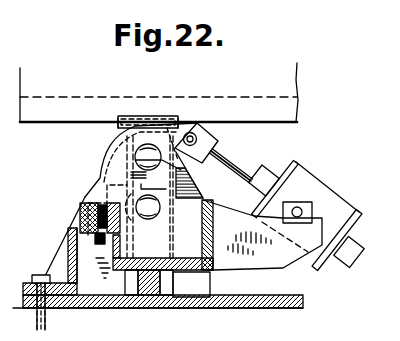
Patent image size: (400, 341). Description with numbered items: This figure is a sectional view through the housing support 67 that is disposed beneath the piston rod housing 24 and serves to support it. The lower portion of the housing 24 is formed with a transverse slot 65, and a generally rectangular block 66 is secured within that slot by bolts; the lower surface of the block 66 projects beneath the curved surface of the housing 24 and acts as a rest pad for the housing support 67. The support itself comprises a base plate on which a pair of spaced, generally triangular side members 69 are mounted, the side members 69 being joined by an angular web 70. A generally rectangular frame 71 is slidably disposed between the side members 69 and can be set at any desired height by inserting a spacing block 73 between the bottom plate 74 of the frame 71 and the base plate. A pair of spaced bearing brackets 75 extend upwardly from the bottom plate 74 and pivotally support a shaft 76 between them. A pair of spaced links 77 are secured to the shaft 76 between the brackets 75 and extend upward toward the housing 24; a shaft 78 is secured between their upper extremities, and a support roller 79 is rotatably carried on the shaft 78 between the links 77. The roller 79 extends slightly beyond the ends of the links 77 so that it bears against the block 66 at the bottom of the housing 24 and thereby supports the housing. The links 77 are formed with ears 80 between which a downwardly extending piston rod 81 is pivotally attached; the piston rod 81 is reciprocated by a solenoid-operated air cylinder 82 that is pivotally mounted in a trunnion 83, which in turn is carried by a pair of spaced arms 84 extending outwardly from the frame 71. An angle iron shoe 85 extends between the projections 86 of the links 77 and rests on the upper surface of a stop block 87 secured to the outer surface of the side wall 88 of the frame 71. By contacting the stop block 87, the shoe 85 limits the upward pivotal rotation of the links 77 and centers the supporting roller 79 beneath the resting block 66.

The housing 24 is at (37, 123).
The transverse slot 65 is at (124, 114).
The rectangular block 66 is at (177, 116).
The housing support 67 is at (97, 163).
The side members 69 is at (113, 147).
The angular web 70 is at (70, 242).
The frame 71 is at (205, 276).
The spacing block 73 is at (152, 290).
The bottom plate 74 is at (183, 258).
The bearing brackets 75 is at (197, 203).
The shaft 76 is at (148, 220).
The links 77 is at (131, 157).
The shaft 78 is at (147, 154).
The support roller 79 is at (128, 140).
The ears 80 is at (195, 134).
The piston rod 81 is at (236, 167).
The solenoid-operated air cylinder 82 is at (312, 186).
The trunnion 83 is at (307, 210).
The arms 84 is at (277, 266).
The angle iron shoe 85 is at (85, 197).
The projections 86 is at (100, 181).
The stop block 87 is at (80, 213).
The side wall 88 is at (113, 251).